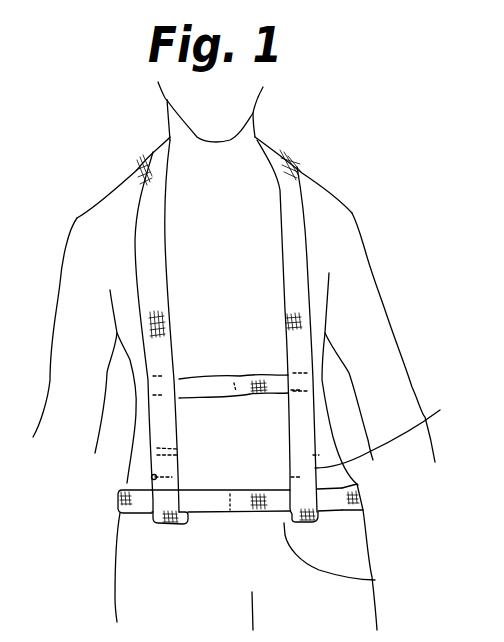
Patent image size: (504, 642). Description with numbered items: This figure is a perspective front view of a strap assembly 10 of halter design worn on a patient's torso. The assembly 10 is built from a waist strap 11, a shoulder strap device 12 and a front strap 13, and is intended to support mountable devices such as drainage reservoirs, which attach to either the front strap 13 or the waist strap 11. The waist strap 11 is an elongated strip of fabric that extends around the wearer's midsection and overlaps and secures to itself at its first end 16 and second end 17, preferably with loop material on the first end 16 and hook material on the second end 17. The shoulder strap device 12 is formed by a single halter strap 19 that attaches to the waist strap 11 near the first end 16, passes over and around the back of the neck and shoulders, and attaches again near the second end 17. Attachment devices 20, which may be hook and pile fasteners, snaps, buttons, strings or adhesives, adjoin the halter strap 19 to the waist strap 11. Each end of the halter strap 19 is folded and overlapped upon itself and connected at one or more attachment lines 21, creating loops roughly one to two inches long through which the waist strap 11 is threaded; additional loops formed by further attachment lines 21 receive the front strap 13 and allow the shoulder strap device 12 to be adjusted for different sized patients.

The strap assembly 10 is at (284, 137).
The waist strap 11 is at (118, 506).
The shoulder strap device 12 is at (150, 150).
The front strap 13 is at (220, 373).
The first end 16 is at (375, 580).
The second end 17 is at (212, 514).
The halter strap 19 is at (295, 240).
The attachment device 20 is at (163, 521).
The attachment line 21 is at (157, 455).